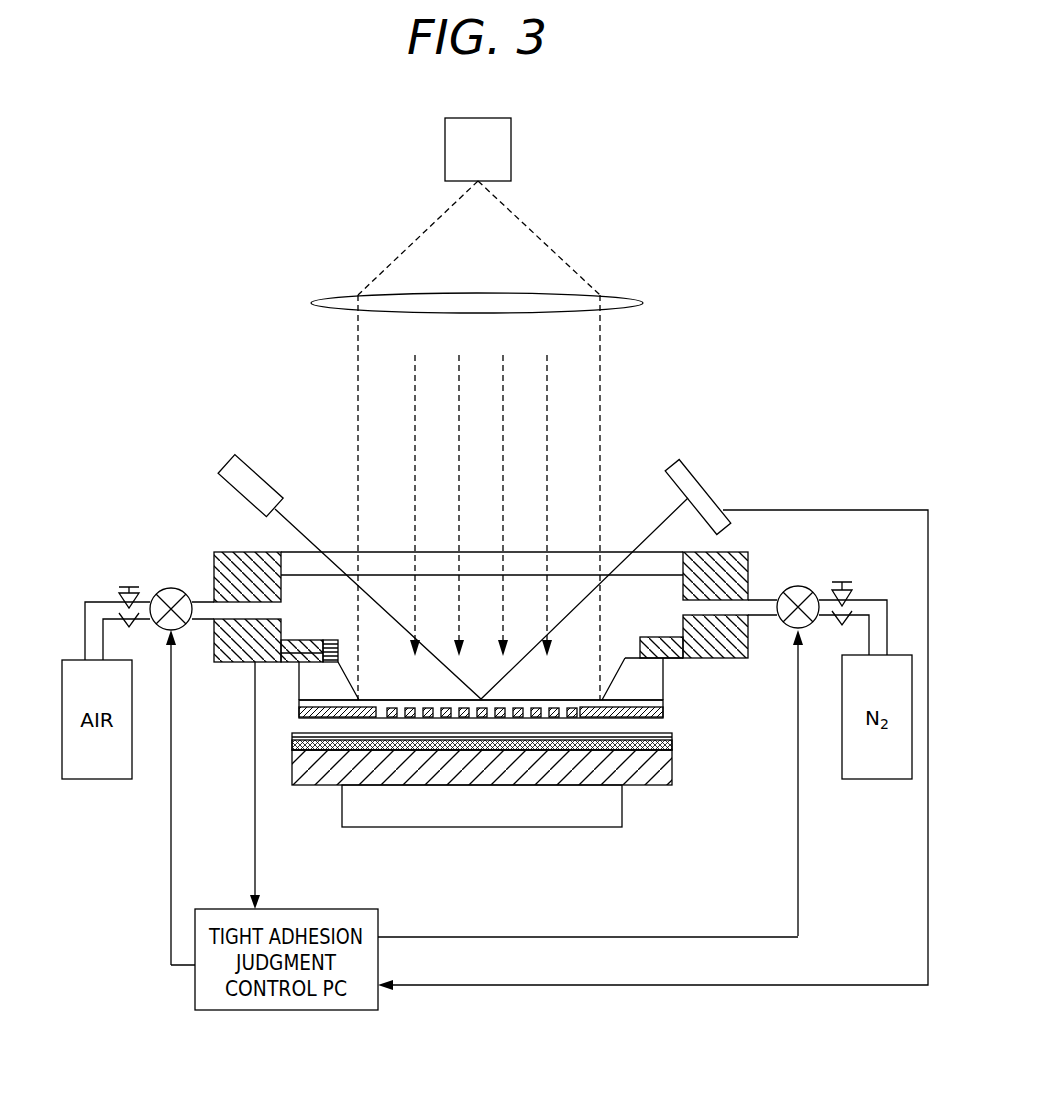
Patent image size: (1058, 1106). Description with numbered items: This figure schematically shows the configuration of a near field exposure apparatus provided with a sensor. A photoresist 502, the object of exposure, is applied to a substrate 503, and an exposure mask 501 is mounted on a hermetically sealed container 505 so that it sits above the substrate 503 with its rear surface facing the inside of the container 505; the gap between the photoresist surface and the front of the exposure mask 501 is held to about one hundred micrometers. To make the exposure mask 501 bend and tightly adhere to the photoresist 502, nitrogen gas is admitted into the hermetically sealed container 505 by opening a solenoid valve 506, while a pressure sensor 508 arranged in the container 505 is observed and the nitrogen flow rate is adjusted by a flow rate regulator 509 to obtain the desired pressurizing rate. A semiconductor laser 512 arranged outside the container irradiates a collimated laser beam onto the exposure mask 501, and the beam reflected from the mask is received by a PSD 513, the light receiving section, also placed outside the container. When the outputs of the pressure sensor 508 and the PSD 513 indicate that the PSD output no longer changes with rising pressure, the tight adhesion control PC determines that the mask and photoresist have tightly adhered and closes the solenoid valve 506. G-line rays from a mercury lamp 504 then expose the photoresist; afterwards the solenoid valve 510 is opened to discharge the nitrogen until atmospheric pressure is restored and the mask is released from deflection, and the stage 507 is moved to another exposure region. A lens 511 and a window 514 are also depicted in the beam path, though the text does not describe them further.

The exposure mask 501 is at (672, 683).
The photoresist 502 is at (672, 742).
The substrate 503 is at (664, 768).
The mercury lamp 504 is at (478, 149).
The hermetically sealed container 505 is at (740, 562).
The solenoid valve 506 is at (798, 585).
The stage 507 is at (613, 808).
The pressure sensor 508 is at (328, 640).
The flow rate regulator 509 is at (844, 582).
The solenoid valve 510 is at (160, 632).
The lens 511 is at (630, 297).
The semiconductor laser 512 is at (243, 470).
The PSD (semiconductor position detector) 513 is at (680, 475).
The window 514 is at (383, 565).